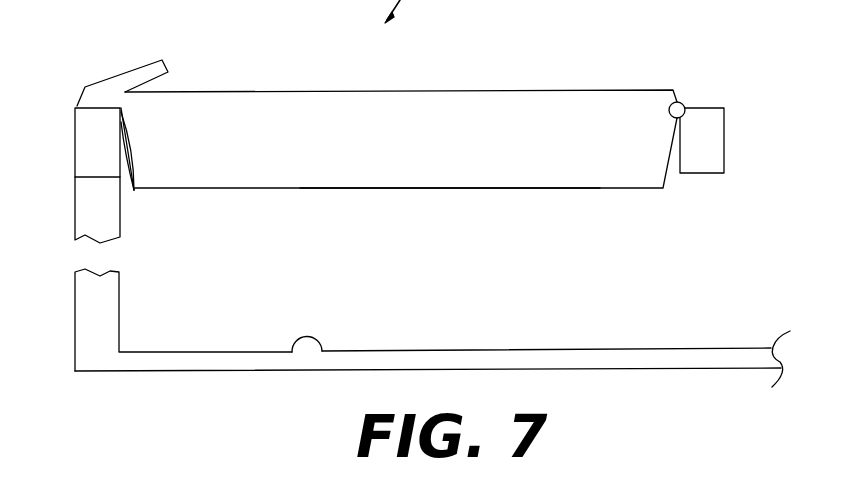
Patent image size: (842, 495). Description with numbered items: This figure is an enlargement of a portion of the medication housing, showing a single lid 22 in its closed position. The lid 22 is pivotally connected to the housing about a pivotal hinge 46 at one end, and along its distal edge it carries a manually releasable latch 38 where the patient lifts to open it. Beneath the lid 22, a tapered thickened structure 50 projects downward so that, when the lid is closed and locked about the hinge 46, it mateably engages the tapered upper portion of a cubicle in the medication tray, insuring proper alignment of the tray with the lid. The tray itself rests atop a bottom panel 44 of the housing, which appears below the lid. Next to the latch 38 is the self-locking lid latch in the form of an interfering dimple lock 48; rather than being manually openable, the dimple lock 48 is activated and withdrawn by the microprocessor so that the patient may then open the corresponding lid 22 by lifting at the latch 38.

The lid 22 is at (312, 91).
The manually releasable latch 38 is at (130, 70).
The bottom panel 44 is at (293, 352).
The pivotal hinge 46 is at (684, 103).
The dimple lock 48 is at (118, 157).
The tapered thickened structure 50 is at (457, 145).